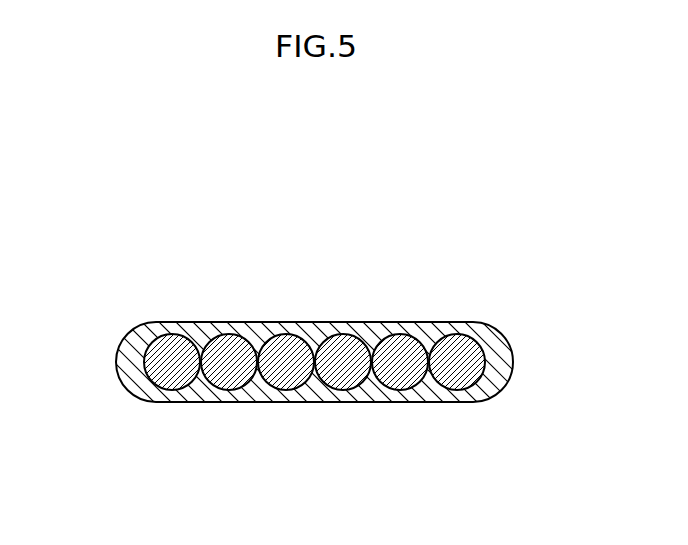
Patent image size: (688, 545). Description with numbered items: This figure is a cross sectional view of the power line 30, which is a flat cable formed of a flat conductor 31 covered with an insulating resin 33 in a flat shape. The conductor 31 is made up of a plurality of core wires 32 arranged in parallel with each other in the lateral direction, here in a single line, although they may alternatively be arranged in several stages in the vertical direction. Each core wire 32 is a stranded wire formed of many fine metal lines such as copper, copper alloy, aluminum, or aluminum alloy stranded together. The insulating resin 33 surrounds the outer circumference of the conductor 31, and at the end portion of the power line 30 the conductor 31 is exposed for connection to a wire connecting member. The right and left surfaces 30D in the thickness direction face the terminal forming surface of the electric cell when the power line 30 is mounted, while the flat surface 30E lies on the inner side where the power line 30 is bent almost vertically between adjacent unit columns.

The power line 30 is at (324, 216).
The surface in the thickness direction 30D is at (115, 360).
The flat surface 30E is at (345, 322).
The conductor 31 is at (463, 334).
The core wire 32 is at (347, 366).
The insulating resin 33 is at (324, 357).